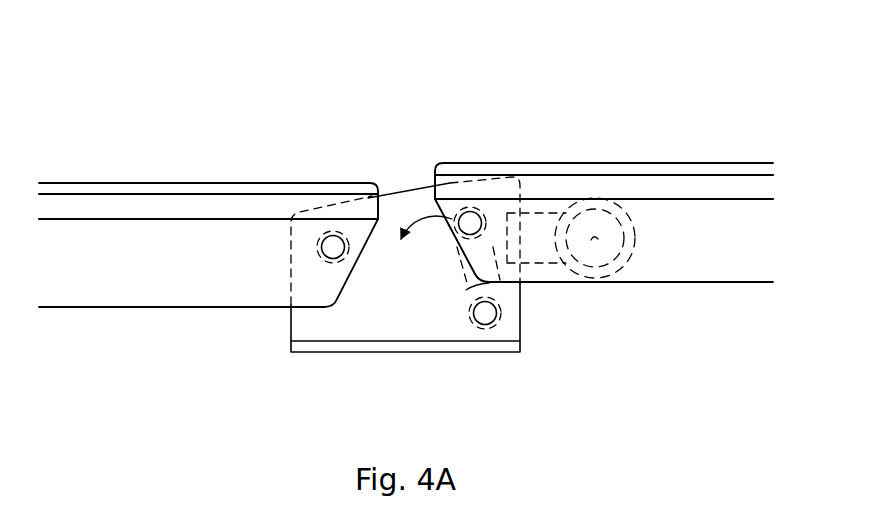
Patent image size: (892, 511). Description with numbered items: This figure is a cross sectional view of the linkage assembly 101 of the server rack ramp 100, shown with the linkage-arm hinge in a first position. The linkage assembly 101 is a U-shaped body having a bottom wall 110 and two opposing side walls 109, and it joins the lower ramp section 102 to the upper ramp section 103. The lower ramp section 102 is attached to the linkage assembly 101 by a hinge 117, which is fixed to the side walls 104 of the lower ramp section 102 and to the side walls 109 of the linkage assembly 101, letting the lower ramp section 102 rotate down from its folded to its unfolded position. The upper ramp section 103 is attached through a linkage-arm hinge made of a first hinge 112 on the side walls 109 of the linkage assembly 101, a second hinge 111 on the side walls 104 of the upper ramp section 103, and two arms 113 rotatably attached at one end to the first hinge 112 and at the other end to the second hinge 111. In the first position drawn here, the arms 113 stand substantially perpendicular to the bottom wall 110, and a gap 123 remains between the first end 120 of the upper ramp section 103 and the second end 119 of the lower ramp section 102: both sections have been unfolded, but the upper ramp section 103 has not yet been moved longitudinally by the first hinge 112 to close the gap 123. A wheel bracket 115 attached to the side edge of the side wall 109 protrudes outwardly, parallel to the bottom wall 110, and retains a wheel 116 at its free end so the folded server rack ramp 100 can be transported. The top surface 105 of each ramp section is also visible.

The server rack ramp 100 is at (624, 87).
The linkage assembly 101 is at (489, 371).
The lower ramp section 102 is at (113, 179).
The upper ramp section 103 is at (748, 159).
The side walls 104 is at (118, 268).
The rail top flange 105 is at (233, 194).
The side walls 109 is at (313, 320).
The bottom wall 110 is at (367, 353).
The second hinge 111 is at (478, 214).
The first hinge 112 is at (489, 317).
The arms 113 is at (473, 286).
The wheel brackets 115 is at (556, 267).
The wheels 116 is at (637, 237).
The hinge 117 is at (331, 247).
The second end 119 is at (345, 193).
The first end 120 is at (458, 174).
The gap 123 is at (407, 175).